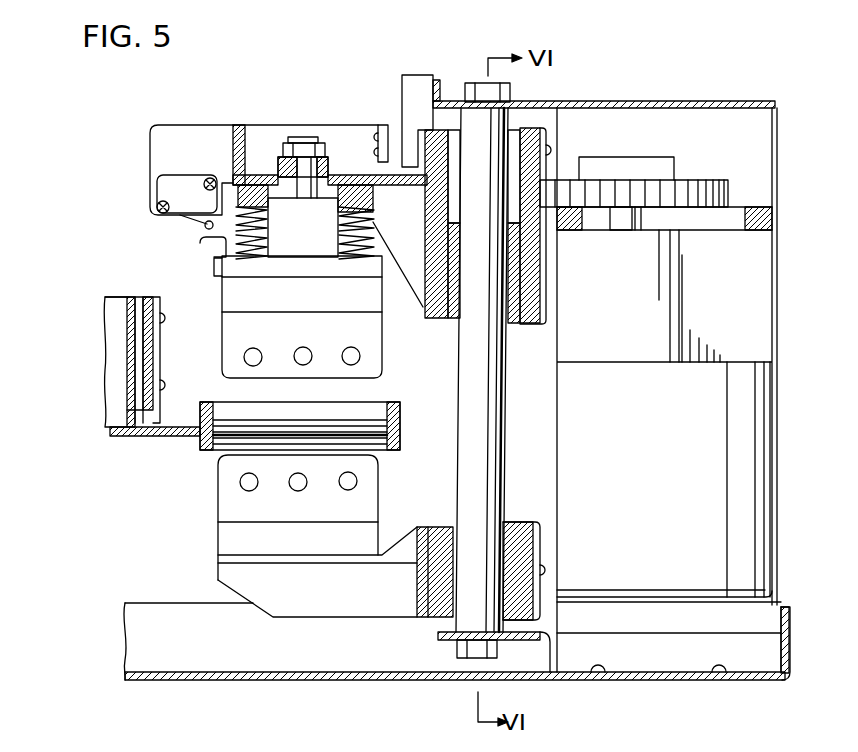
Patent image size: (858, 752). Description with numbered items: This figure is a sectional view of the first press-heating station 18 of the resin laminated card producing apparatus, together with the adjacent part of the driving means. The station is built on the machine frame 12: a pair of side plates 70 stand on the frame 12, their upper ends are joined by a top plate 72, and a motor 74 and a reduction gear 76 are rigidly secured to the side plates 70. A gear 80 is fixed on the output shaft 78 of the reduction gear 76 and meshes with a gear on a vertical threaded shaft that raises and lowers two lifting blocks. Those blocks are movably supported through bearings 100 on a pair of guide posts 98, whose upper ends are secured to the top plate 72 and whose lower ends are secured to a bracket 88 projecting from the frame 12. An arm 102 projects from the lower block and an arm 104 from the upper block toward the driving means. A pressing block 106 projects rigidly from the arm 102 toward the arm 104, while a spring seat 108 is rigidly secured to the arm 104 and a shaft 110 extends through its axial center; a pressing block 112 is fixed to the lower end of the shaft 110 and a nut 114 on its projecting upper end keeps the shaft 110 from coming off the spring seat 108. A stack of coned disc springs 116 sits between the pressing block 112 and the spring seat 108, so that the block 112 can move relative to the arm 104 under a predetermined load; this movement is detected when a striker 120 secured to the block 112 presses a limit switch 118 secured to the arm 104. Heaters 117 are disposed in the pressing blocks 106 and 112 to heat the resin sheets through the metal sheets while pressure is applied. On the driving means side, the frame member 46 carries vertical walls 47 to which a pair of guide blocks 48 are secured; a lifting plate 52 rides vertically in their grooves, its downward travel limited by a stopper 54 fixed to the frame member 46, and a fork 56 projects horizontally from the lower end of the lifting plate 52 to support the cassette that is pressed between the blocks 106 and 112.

The machine frame 12 is at (266, 681).
The first press-heating station 18 is at (312, 88).
The frame member 46 is at (124, 425).
The vertical walls 47 is at (127, 352).
The guide blocks 48 is at (158, 340).
The lifting plate 52 is at (150, 297).
The stopper 54 is at (135, 438).
The fork 56 is at (188, 441).
The side plates 70 is at (641, 666).
The top plate 72 is at (640, 109).
The motor 74 is at (745, 482).
The reduction gear 76 is at (755, 340).
The output shaft 78 is at (622, 232).
The gear 80 is at (694, 196).
The bracket 88 is at (494, 652).
The guide posts 98 is at (488, 415).
The bearings 100 is at (432, 318).
The arm 102 is at (337, 618).
The arm 104 is at (345, 143).
The pressing block 106 is at (378, 500).
The spring seat 108 is at (370, 197).
The shaft 110 is at (330, 172).
The pressing block 112 is at (363, 333).
The nut 114 is at (288, 143).
The coned disc springs 116 is at (365, 226).
The heaters 117 is at (253, 348).
The limit switch 118 is at (188, 195).
The striker 120 is at (198, 243).